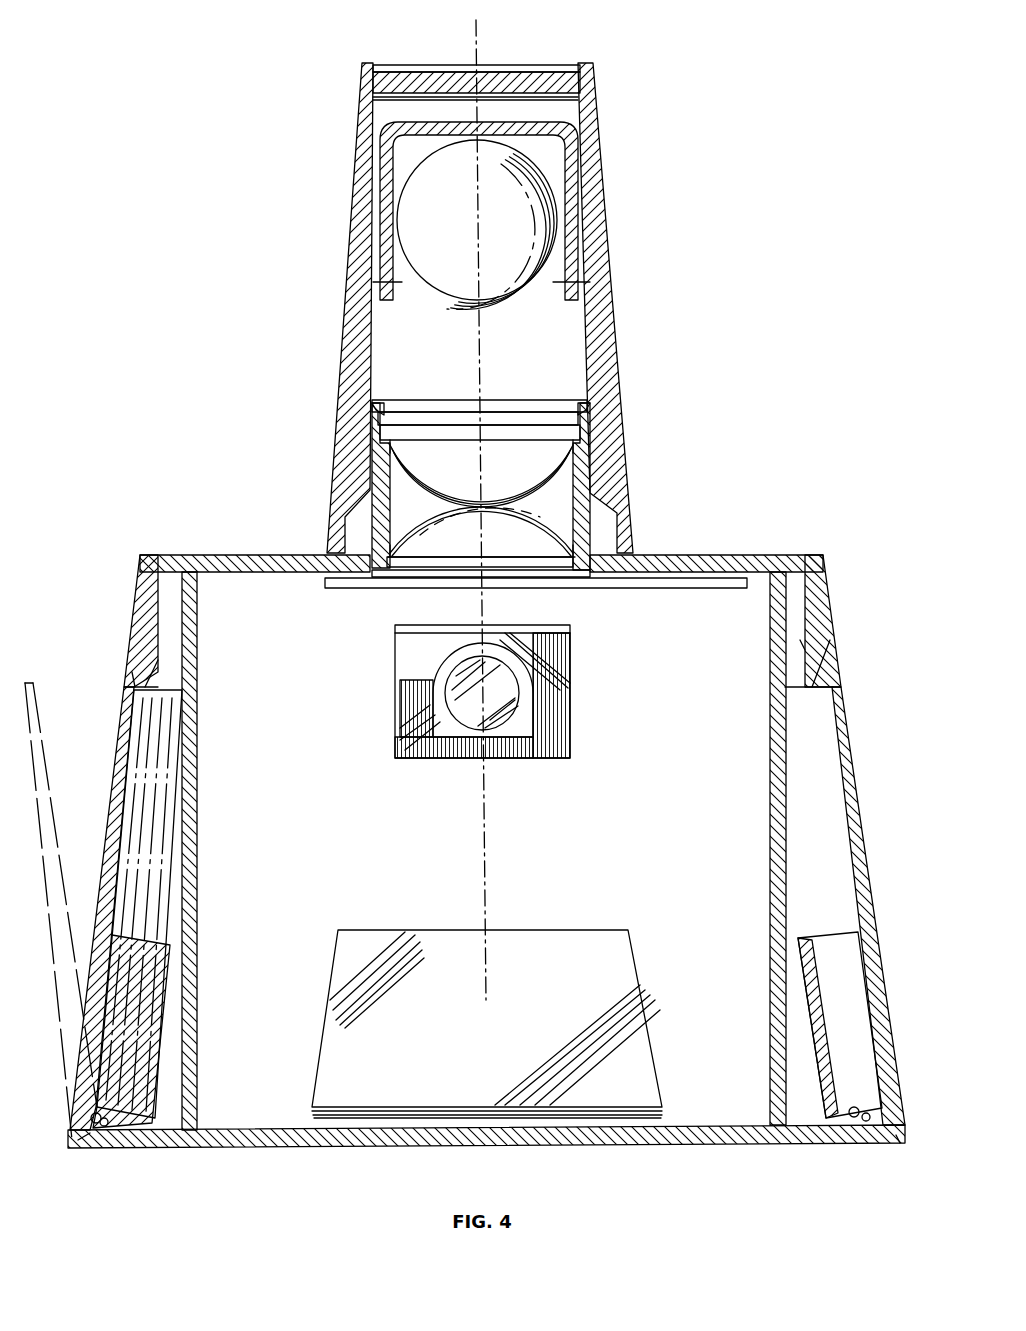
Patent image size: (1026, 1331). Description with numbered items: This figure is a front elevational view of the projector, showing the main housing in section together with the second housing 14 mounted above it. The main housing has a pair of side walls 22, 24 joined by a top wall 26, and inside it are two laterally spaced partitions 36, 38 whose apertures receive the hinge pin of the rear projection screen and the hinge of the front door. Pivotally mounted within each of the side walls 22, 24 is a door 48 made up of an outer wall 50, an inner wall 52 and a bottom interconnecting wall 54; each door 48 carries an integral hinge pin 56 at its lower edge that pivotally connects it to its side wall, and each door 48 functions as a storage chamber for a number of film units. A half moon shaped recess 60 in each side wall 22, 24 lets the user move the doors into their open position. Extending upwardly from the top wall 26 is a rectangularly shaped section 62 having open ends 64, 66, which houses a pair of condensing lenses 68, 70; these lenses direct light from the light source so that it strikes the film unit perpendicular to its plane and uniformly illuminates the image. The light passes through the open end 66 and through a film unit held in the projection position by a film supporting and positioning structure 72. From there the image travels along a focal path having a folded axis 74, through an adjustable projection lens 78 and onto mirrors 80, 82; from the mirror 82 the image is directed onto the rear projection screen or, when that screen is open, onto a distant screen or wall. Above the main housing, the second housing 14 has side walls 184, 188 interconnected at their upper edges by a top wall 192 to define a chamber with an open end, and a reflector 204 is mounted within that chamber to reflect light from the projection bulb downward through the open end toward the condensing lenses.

The second housing 14 is at (486, 281).
The side wall 22 is at (135, 607).
The side wall 24 is at (834, 612).
The top wall 26 is at (262, 558).
The partition 36 is at (199, 778).
The partition 38 is at (769, 808).
The door 48 is at (481, 941).
The outer wall 50 is at (128, 780).
The inner wall 52 is at (160, 1047).
The bottom interconnecting wall 54 is at (108, 1128).
The hinge pin 56 is at (85, 1140).
The half moon shaped recess 60 is at (132, 664).
The rectangularly shaped section 62 is at (583, 470).
The open end 64 is at (580, 405).
The open end 66 is at (570, 576).
The condensing lens 68 is at (395, 472).
The condensing lens 70 is at (432, 536).
The film supporting and positioning structure 72 is at (366, 592).
The folded axis 74 is at (484, 855).
The adjustable projection lens 78 is at (435, 723).
The mirror 80 is at (452, 700).
The mirror 82 is at (345, 990).
The side wall 184 is at (343, 342).
The side wall 188 is at (605, 290).
The top wall 192 is at (432, 62).
The reflector 204 is at (463, 128).